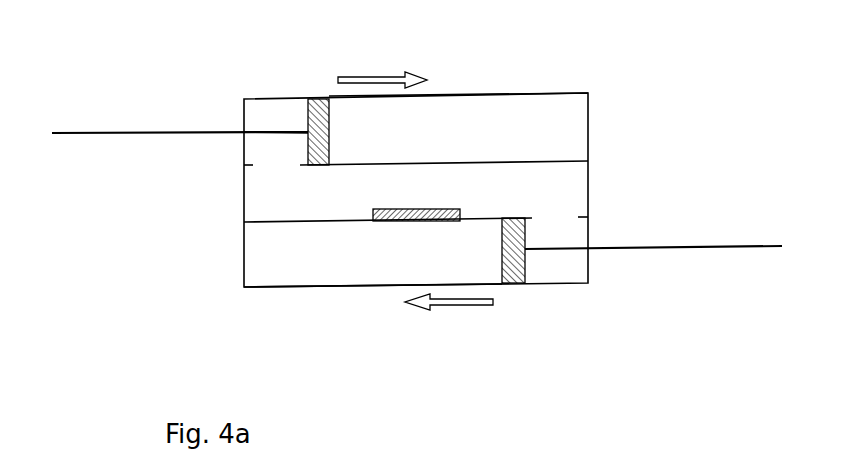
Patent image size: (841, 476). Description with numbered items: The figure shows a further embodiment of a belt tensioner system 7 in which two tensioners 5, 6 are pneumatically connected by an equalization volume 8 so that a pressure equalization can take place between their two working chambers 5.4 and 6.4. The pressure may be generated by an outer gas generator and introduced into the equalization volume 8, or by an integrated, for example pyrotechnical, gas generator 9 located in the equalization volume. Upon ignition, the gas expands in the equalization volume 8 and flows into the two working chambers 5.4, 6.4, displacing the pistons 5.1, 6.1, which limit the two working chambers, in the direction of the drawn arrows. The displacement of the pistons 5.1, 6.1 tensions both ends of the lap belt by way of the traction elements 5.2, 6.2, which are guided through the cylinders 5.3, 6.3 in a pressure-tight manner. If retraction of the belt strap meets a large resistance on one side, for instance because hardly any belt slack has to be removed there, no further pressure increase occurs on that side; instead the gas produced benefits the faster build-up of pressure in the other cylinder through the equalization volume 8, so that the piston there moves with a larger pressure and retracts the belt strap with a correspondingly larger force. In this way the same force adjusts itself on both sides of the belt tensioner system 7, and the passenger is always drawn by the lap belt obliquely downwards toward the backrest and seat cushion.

The tensioner 5 is at (461, 69).
The piston 5.1 is at (323, 97).
The traction element 5.2 is at (86, 135).
The cylinder 5.3 is at (505, 94).
The working chamber 5.4 is at (259, 116).
The tensioner 6 is at (373, 326).
The piston 6.1 is at (517, 282).
The traction element 6.2 is at (725, 252).
The cylinder 6.3 is at (275, 288).
The working chamber 6.4 is at (572, 233).
The belt tensioner system 7 is at (655, 50).
The equalization volume 8 is at (500, 205).
The gas generator 9 is at (367, 212).